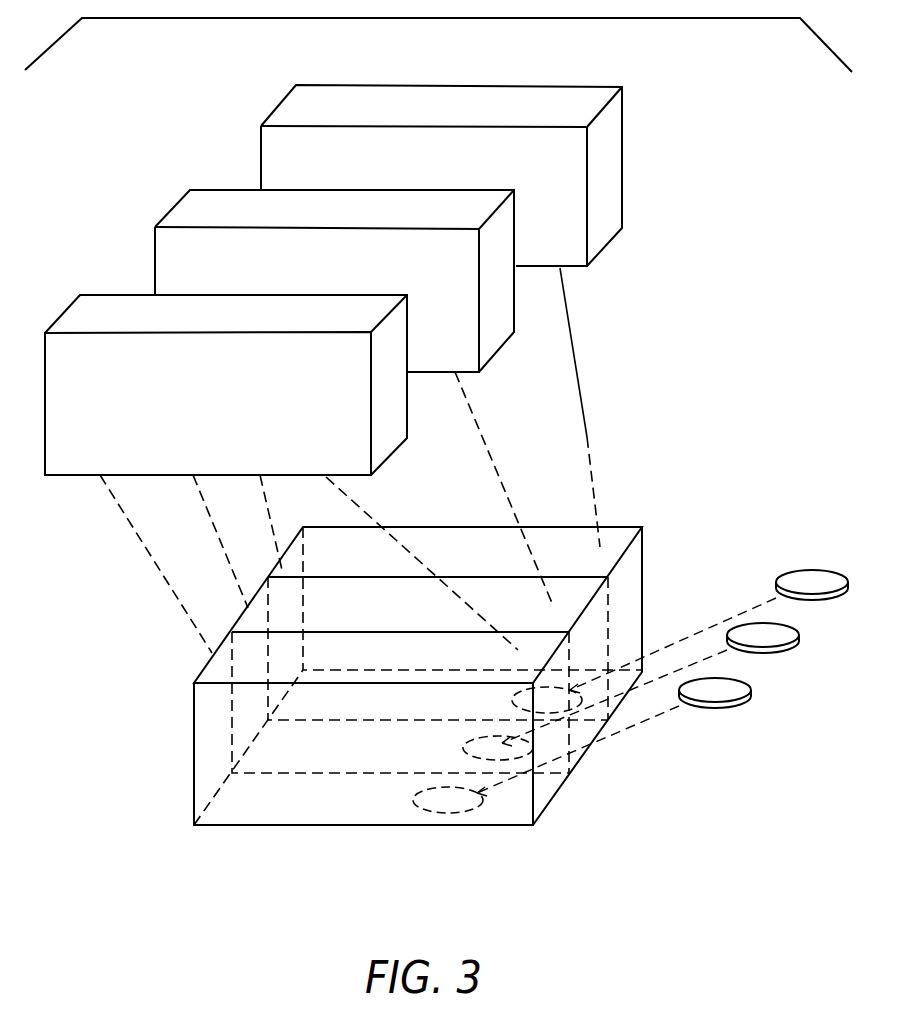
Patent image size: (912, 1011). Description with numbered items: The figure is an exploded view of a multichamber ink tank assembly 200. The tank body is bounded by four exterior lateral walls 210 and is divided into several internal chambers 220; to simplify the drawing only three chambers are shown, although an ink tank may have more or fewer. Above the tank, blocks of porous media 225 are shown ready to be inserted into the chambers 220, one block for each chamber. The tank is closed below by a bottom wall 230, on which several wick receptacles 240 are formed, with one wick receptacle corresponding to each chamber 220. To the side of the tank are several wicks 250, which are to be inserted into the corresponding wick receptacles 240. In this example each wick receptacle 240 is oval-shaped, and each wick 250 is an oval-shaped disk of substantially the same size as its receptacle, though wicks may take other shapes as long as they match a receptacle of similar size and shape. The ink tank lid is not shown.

The multichamber ink tank assembly 200 is at (185, 882).
The exterior lateral walls 210 is at (212, 772).
The internal chambers 220 is at (372, 567).
The porous media 225 is at (298, 112).
The bottom wall 230 is at (373, 825).
The wick receptacles 240 is at (512, 700).
The wicks 250 is at (812, 600).